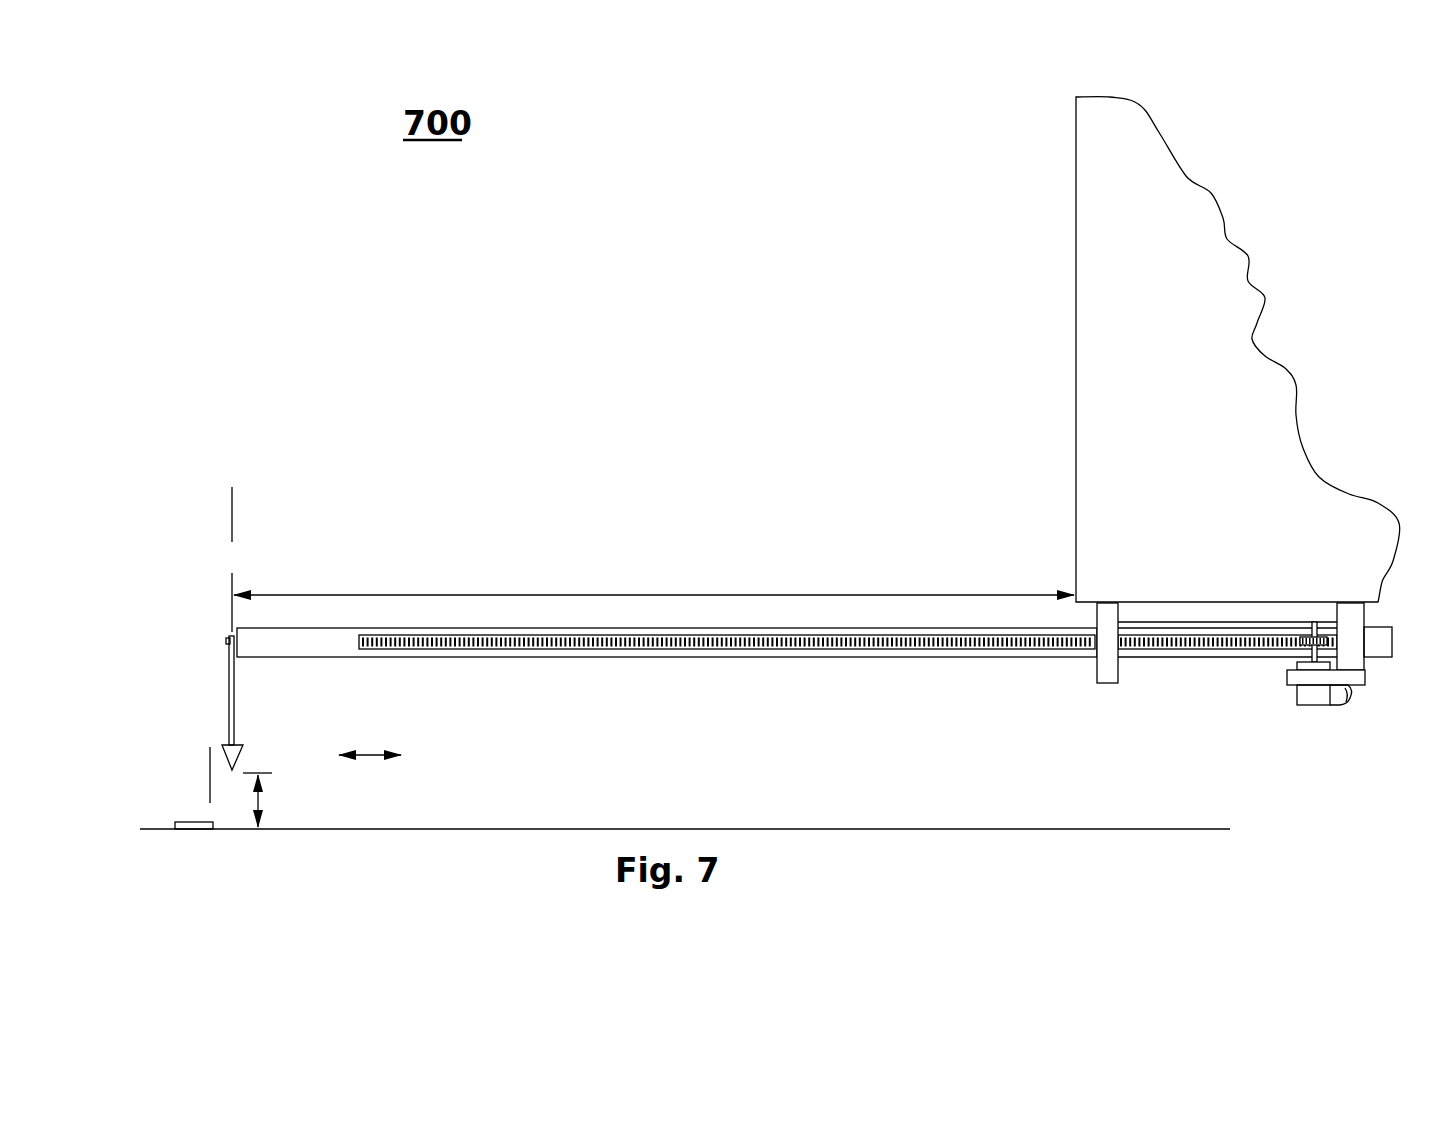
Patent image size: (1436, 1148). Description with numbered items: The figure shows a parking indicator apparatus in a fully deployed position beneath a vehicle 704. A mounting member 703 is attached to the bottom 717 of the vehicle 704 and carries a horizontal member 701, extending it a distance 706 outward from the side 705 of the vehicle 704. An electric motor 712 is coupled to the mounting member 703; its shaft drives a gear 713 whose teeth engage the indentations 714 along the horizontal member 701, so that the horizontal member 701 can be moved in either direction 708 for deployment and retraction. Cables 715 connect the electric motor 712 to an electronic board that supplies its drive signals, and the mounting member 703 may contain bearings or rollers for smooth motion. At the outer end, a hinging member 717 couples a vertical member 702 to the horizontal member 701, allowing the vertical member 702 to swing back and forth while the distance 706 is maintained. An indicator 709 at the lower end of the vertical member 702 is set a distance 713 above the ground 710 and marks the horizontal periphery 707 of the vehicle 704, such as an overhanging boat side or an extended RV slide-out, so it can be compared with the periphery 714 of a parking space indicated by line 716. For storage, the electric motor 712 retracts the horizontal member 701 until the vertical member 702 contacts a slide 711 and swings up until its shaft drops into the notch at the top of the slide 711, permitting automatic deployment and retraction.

The horizontal member 701 is at (510, 658).
The vertical member 702 is at (236, 688).
The mounting member 703 is at (1110, 672).
The vehicle 704 is at (1123, 147).
The side 705 is at (1074, 505).
The distance 706 is at (665, 602).
The horizontal periphery 707 is at (230, 512).
The direction 708 is at (373, 755).
The indicator 709 is at (243, 757).
The ground 710 is at (508, 829).
The slide 711 is at (1090, 648).
The electric motor 712 is at (1308, 692).
The gear 713 is at (1306, 634).
The indentations 714 is at (737, 646).
The cables 715 is at (1343, 700).
The line 716 is at (198, 831).
The hinging member 717 is at (226, 636).